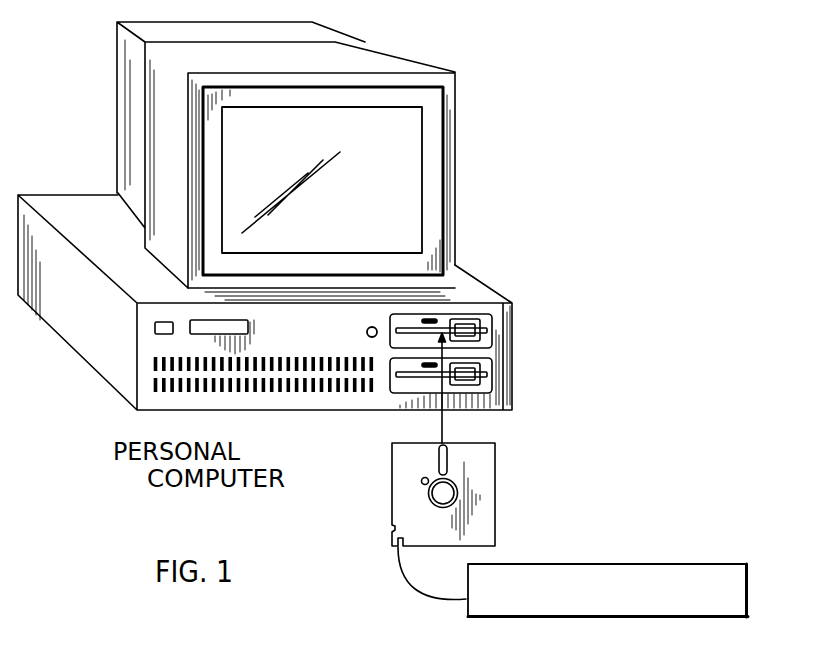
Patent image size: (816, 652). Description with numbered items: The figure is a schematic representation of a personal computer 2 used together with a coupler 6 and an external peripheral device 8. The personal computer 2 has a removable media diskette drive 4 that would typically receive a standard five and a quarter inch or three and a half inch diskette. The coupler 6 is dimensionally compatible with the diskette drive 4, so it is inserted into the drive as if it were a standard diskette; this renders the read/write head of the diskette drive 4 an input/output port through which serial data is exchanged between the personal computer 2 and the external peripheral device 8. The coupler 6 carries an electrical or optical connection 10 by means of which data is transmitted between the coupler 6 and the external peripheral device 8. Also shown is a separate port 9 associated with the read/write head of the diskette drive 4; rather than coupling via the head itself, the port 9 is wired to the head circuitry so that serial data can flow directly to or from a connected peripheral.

The personal computer 2 is at (462, 155).
The diskette drive 4 is at (496, 326).
The coupler 6 is at (505, 466).
The external peripheral device 8 is at (635, 562).
The port 9 is at (378, 329).
The electrical or optical connection 10 is at (418, 582).